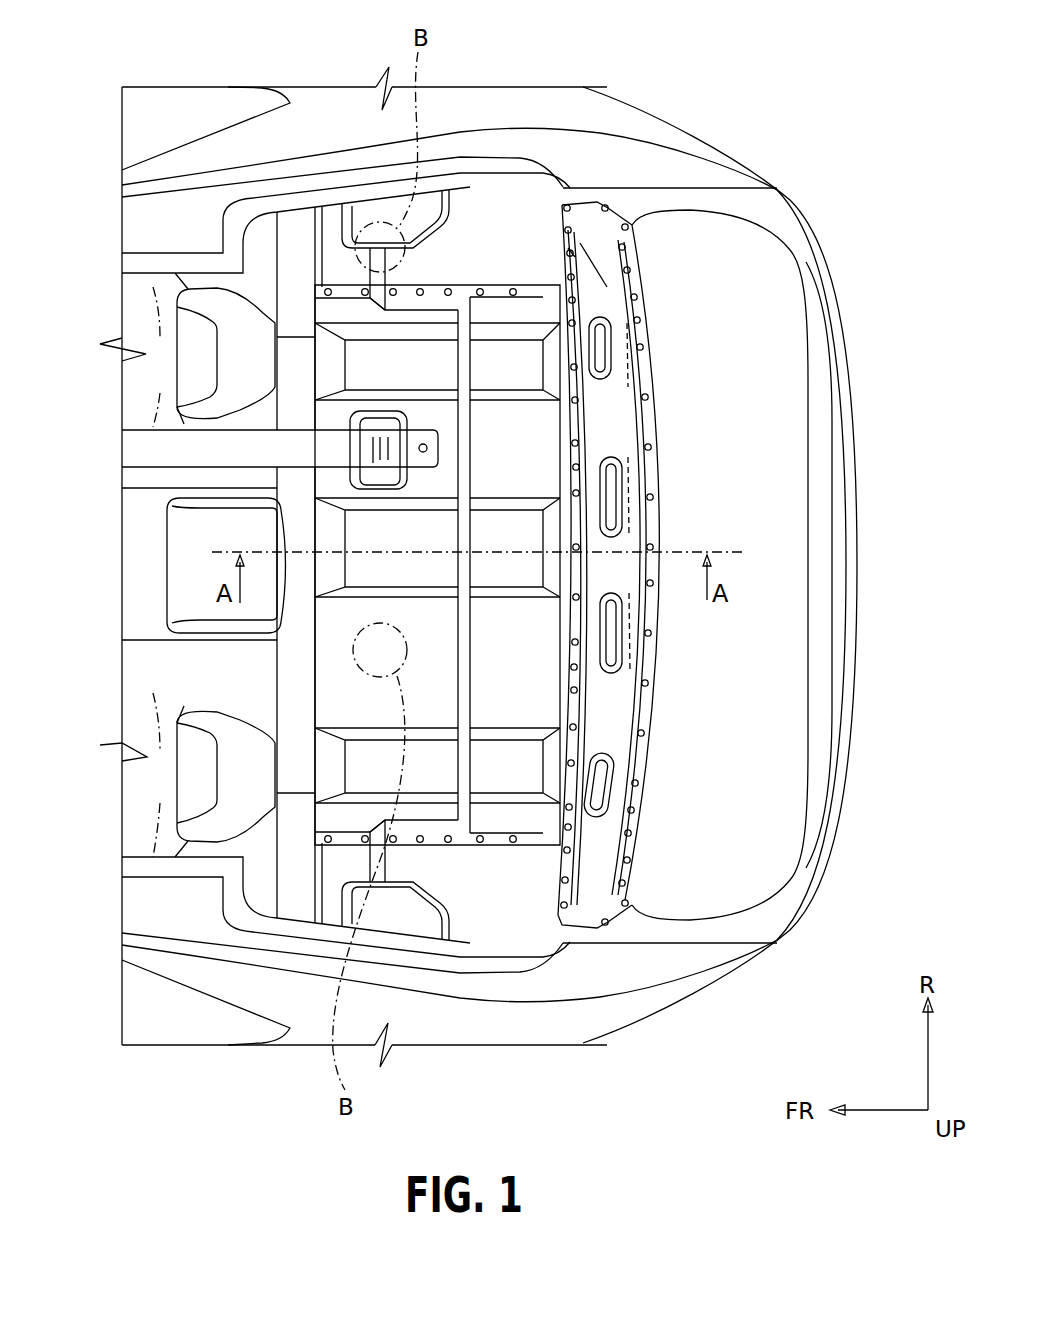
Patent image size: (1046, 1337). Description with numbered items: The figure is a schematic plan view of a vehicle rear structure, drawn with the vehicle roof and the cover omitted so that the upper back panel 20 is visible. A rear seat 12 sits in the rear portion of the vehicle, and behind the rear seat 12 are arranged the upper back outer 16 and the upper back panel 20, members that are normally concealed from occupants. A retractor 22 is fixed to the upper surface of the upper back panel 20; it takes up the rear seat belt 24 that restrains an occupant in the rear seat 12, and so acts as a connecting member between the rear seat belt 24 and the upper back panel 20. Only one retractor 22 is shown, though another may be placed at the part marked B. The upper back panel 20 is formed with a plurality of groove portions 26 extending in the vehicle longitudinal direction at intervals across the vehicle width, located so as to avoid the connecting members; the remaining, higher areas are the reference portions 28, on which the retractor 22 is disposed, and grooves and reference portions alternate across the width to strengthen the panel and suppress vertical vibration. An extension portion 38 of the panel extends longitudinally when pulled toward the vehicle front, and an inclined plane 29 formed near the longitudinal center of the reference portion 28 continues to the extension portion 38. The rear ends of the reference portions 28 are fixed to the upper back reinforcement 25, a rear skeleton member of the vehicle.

The rear seat 12 is at (147, 408).
The upper back outer 16 is at (293, 667).
The upper back panel 20 is at (463, 263).
The retractor 22 is at (353, 423).
The rear seat belt 24 is at (190, 453).
The upper back reinforcement 25 is at (613, 740).
The groove portions 26 is at (523, 368).
The reference portions 28 is at (550, 450).
The inclined plane 29 is at (467, 713).
The extension portion 38 is at (467, 353).